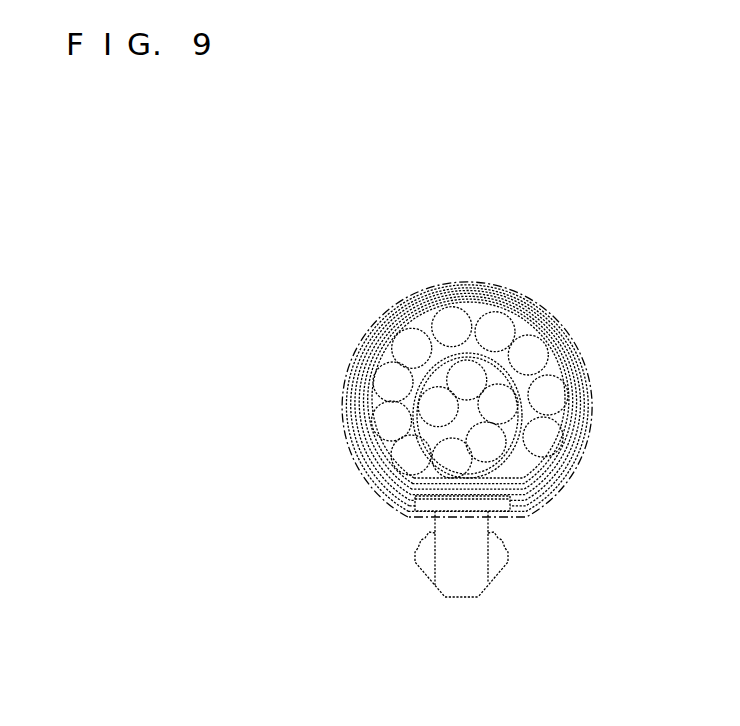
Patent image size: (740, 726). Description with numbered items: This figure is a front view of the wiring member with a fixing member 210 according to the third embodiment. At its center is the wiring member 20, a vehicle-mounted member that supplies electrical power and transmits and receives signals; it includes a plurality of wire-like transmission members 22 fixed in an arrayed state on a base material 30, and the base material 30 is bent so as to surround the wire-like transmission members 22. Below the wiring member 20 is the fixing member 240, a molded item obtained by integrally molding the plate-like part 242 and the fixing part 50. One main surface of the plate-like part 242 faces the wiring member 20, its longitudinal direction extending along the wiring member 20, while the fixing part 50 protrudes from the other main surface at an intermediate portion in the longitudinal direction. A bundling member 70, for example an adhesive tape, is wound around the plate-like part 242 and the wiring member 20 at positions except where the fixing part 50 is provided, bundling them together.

The wiring member with a fixing member 210 is at (327, 213).
The wiring member 20 is at (568, 487).
The bundling member 70 is at (543, 500).
The wire-like transmission members 22 is at (497, 302).
The base material 30 is at (520, 390).
The fixing part 50 is at (490, 604).
The plate-like part 242 is at (510, 511).
The fixing member 240 is at (440, 609).